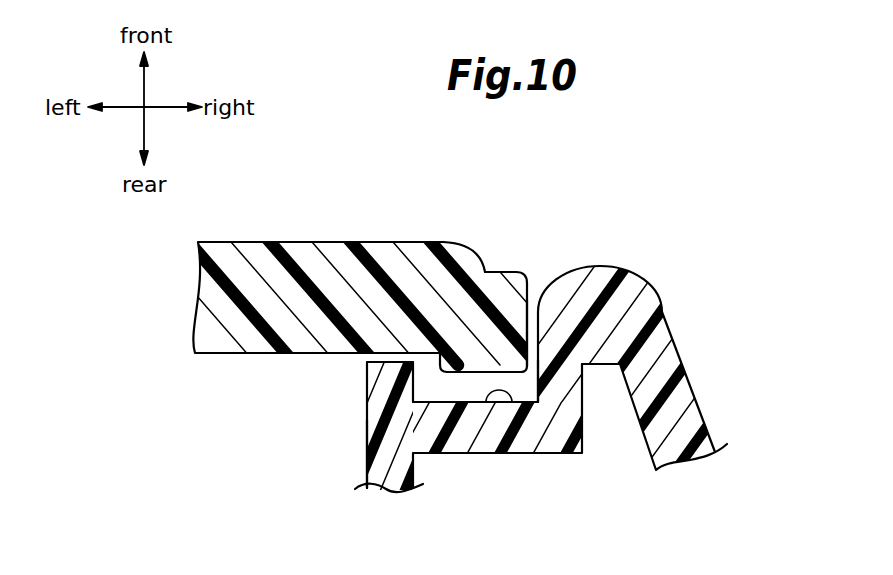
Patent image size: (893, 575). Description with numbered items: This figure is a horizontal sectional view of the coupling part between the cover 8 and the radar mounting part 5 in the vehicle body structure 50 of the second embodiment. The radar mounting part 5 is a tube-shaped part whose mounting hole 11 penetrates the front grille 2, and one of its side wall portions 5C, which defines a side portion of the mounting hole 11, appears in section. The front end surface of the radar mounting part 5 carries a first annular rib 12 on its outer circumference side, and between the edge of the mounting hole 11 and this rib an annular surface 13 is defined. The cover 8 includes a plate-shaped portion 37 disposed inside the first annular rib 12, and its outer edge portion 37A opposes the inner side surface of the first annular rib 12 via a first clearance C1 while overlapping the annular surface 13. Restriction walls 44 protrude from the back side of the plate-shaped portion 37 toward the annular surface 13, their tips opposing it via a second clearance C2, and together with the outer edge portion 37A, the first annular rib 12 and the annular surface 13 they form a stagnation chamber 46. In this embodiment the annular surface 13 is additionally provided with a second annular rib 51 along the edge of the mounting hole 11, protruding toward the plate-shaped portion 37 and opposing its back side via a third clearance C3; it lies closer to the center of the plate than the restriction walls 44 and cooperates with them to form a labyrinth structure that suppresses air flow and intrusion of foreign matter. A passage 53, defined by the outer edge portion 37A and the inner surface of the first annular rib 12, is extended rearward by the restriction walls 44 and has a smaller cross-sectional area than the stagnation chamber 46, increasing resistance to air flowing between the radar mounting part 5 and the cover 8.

The front grille 2 is at (727, 392).
The radar mounting part 5 is at (696, 346).
The side wall portion 5C is at (378, 467).
The cover 8 is at (354, 229).
The mounting hole 11 is at (366, 420).
The first annular rib 12 is at (601, 270).
The annular surface 13 is at (503, 407).
The plate-shaped portion 37 is at (243, 252).
The outer edge portion 37A is at (456, 252).
The restriction wall 44 is at (542, 362).
The stagnation chamber 46 is at (463, 390).
The vehicle body structure 50 is at (638, 139).
The second annular rib 51 is at (377, 381).
The passage 53 is at (548, 328).
The first clearance C1 is at (534, 330).
The second clearance C2 is at (448, 383).
The third clearance C3 is at (377, 356).